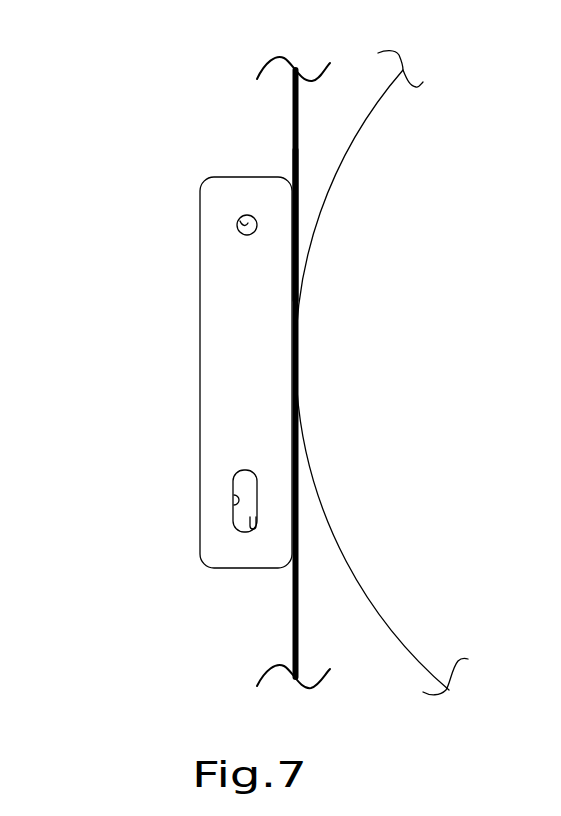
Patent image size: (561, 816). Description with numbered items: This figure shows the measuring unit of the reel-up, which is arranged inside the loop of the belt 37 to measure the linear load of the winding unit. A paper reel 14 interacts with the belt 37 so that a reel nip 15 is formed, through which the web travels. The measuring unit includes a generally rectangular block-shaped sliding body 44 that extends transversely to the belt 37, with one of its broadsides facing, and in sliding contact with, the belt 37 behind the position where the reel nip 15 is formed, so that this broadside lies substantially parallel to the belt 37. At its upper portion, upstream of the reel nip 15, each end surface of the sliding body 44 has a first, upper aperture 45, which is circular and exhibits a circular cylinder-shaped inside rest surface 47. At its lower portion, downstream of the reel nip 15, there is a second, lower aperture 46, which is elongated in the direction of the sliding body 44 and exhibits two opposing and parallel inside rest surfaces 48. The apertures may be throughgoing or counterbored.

The paper reel 14 is at (367, 368).
The reel nip 15 is at (308, 218).
The belt 37 is at (293, 616).
The sliding body 44 is at (213, 373).
The upper aperture 45 is at (248, 234).
The lower aperture 46 is at (248, 472).
The inside rest surface 47 is at (238, 215).
The inside rest surfaces 48 is at (236, 500).